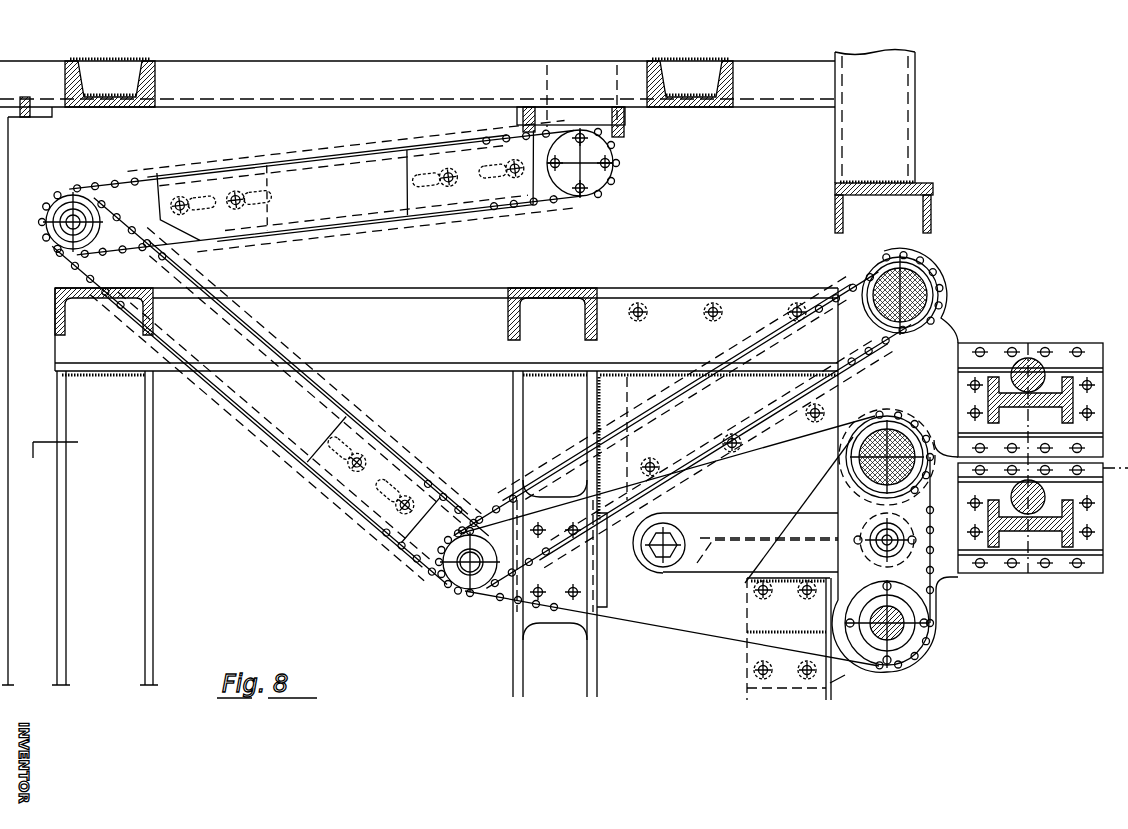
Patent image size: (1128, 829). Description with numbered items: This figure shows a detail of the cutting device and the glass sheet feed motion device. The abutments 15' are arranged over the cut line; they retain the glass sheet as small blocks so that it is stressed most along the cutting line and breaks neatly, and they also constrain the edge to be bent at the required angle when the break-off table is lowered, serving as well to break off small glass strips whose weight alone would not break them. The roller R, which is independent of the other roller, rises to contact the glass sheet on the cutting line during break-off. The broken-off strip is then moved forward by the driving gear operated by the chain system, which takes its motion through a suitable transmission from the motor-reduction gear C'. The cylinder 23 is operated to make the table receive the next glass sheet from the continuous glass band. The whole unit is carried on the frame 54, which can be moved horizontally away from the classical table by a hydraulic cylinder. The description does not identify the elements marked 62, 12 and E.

The support arm 62 is at (373, 207).
The chain 12 is at (455, 208).
The motor-reduction gear C' is at (580, 197).
The frame 54 is at (441, 360).
The end E is at (51, 463).
The roller R is at (893, 421).
The cylinder 23 is at (1027, 365).
The abutment 15' is at (1039, 483).